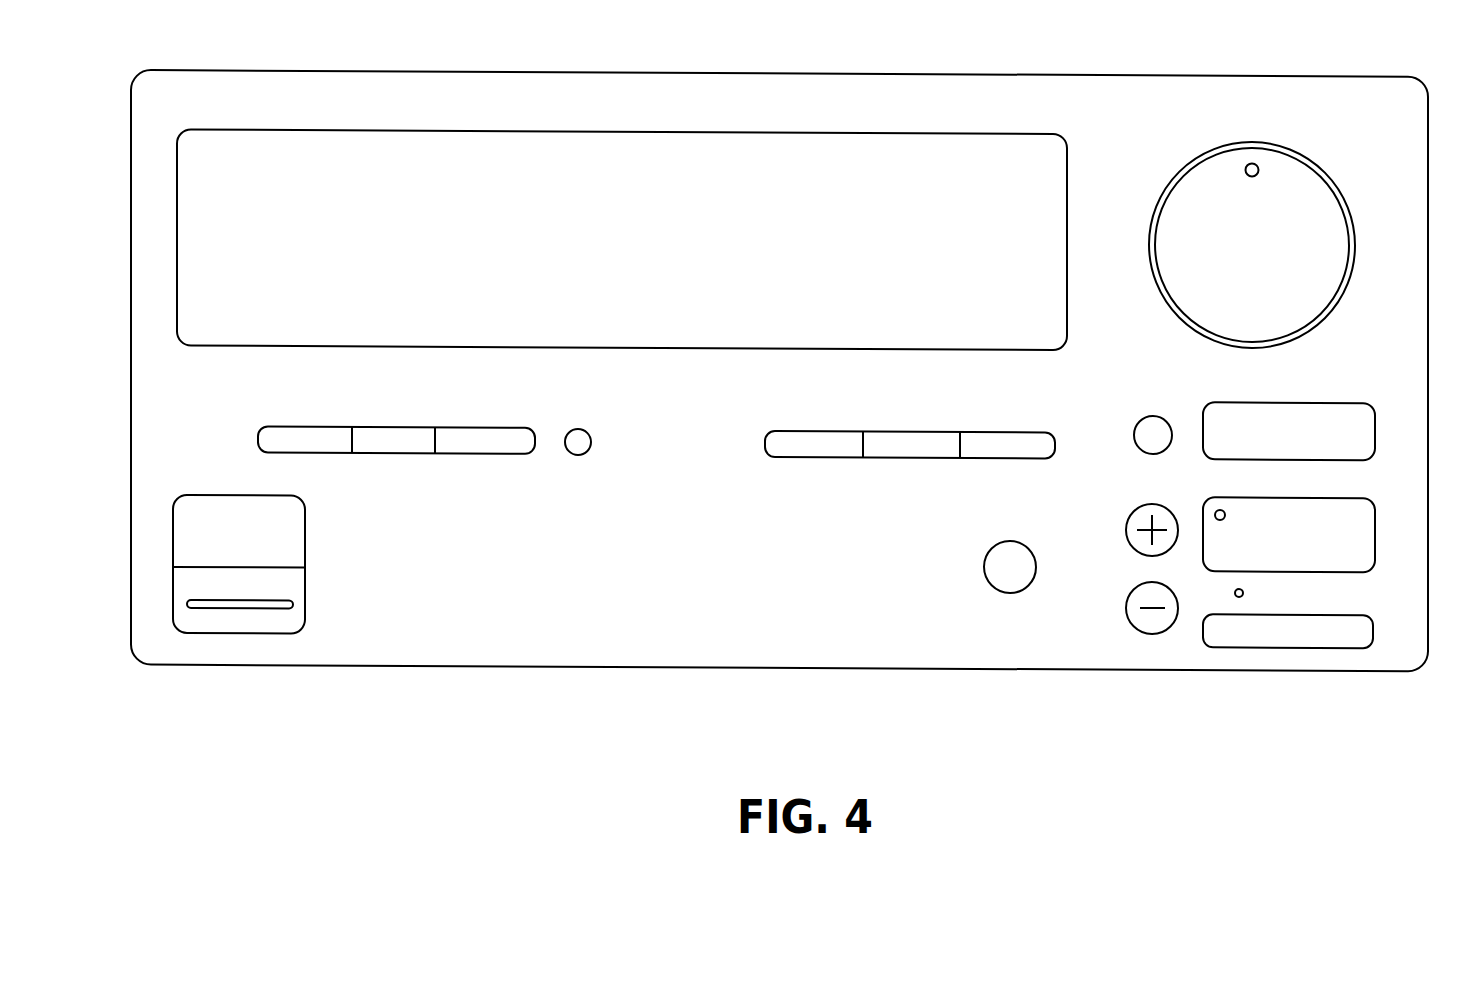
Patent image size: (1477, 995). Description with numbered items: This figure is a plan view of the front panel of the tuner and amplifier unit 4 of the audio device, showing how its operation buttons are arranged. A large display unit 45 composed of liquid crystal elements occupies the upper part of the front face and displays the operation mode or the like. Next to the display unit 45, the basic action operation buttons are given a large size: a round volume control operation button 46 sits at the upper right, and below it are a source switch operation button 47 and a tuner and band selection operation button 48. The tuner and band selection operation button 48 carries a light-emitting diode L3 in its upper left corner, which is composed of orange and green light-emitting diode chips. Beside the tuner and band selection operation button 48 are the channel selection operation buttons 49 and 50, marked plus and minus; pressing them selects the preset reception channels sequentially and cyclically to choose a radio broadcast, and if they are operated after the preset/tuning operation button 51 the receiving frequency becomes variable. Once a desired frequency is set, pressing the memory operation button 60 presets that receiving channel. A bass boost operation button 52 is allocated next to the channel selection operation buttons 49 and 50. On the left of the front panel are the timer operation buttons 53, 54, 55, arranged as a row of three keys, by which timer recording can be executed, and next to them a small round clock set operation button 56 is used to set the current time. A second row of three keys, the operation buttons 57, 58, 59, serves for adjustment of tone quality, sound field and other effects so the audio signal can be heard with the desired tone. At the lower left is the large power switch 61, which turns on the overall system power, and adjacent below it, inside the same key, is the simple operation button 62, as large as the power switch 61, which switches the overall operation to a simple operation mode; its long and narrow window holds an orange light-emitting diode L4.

The tuner and amplifier unit 4 is at (1233, 685).
The display unit 45 is at (1013, 128).
The volume control operation button 46 is at (1272, 140).
The source switch operation button 47 is at (1375, 423).
The tuner and band selection operation button 48 is at (1375, 533).
The channel selection operation button 49 is at (1127, 524).
The channel selection operation button 50 is at (1127, 602).
The preset/tuning operation button 51 is at (1373, 628).
The bass boost operation button 52 is at (993, 585).
The timer operation button 53 is at (463, 451).
The timer operation button 54 is at (393, 440).
The timer operation button 55 is at (485, 440).
The clock set operation button 56 is at (587, 452).
The operation button for adjustment of tone quality and sound field 57 is at (835, 453).
The operation button for adjustment of tone quality and sound field 58 is at (911, 445).
The operation button for adjustment of tone quality and sound field 59 is at (1007, 445).
The memory operation button 60 is at (1142, 414).
The power switch 61 is at (305, 523).
The simple operation button 62 is at (305, 603).
The light-emitting diode L3 is at (1225, 505).
The light-emitting diode L4 is at (252, 607).